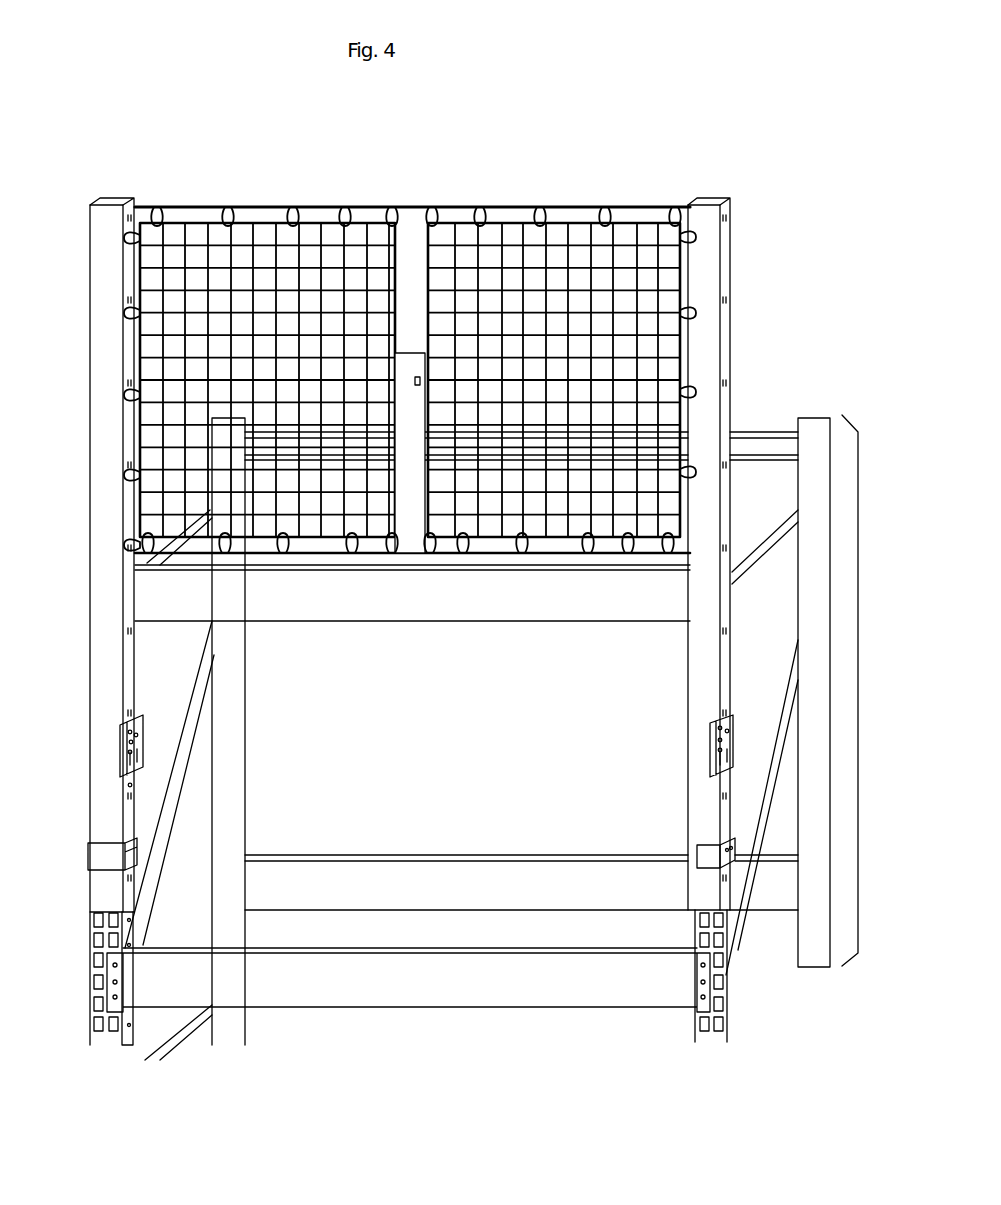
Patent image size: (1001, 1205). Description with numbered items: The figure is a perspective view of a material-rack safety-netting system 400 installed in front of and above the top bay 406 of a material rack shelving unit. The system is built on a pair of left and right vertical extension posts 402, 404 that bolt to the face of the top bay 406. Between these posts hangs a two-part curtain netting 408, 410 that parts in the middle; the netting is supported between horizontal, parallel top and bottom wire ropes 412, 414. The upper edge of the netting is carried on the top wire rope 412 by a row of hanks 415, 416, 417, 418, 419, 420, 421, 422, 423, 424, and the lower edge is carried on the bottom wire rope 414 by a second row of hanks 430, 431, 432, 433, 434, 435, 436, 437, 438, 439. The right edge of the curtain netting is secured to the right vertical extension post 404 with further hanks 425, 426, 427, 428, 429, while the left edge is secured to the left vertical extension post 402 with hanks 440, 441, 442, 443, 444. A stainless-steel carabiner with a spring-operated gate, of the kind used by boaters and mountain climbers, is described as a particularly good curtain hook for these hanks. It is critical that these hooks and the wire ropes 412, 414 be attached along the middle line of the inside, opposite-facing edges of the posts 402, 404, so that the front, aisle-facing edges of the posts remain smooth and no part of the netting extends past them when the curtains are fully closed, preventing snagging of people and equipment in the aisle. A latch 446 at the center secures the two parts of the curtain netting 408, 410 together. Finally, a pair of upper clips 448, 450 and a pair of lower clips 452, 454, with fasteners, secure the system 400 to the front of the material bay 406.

The material-rack safety-netting system 400 is at (192, 148).
The left vertical extension post 402 is at (95, 343).
The right vertical extension post 404 is at (722, 287).
The top bay of material rack 406 is at (858, 698).
The curtain netting part 408 is at (257, 246).
The curtain netting part 410 is at (508, 246).
The top wire rope 412 is at (413, 207).
The bottom wire rope 414 is at (415, 556).
The hank 415 is at (158, 206).
The hank 416 is at (228, 206).
The hank 417 is at (292, 206).
The hank 418 is at (342, 206).
The hank 419 is at (387, 206).
The hank 420 is at (433, 206).
The hank 421 is at (481, 206).
The hank 422 is at (542, 206).
The hank 423 is at (607, 206).
The hank 424 is at (675, 206).
The hank 425 is at (696, 238).
The hank 426 is at (696, 314).
The hank 427 is at (696, 393).
The hank 428 is at (696, 472).
The hank 429 is at (668, 555).
The hank 430 is at (628, 555).
The hank 431 is at (588, 555).
The hank 432 is at (522, 555).
The hank 433 is at (463, 555).
The hank 434 is at (430, 555).
The hank 435 is at (392, 555).
The hank 436 is at (352, 555).
The hank 437 is at (283, 555).
The hank 438 is at (225, 555).
The hank 439 is at (150, 555).
The hank 440 is at (128, 546).
The hank 441 is at (128, 477).
The hank 442 is at (128, 397).
The hank 443 is at (129, 314).
The hank 444 is at (130, 238).
The latch 446 is at (402, 352).
The upper clip 448 is at (140, 730).
The upper clip 450 is at (728, 722).
The lower clip 452 is at (92, 857).
The lower clip 454 is at (700, 848).